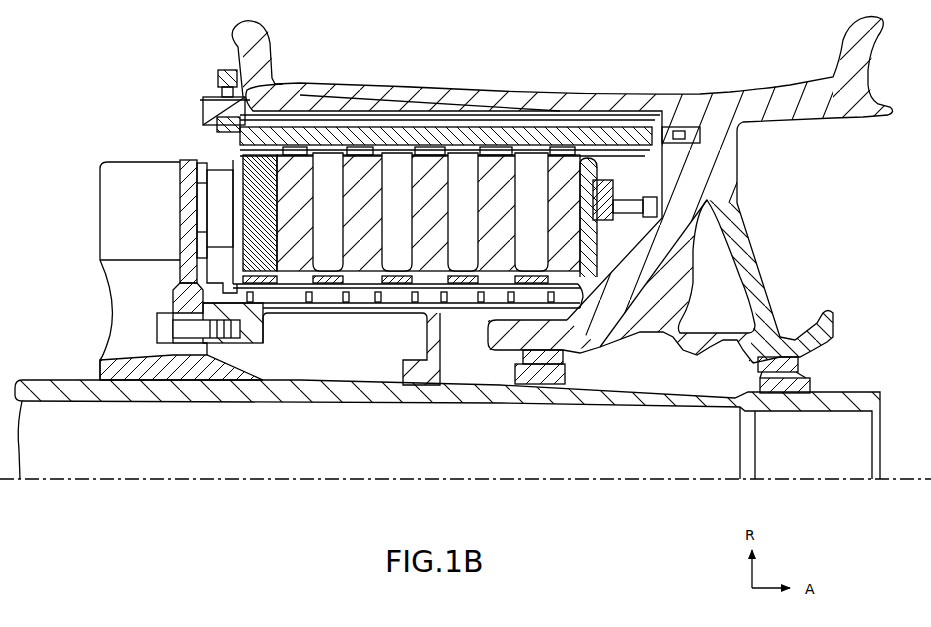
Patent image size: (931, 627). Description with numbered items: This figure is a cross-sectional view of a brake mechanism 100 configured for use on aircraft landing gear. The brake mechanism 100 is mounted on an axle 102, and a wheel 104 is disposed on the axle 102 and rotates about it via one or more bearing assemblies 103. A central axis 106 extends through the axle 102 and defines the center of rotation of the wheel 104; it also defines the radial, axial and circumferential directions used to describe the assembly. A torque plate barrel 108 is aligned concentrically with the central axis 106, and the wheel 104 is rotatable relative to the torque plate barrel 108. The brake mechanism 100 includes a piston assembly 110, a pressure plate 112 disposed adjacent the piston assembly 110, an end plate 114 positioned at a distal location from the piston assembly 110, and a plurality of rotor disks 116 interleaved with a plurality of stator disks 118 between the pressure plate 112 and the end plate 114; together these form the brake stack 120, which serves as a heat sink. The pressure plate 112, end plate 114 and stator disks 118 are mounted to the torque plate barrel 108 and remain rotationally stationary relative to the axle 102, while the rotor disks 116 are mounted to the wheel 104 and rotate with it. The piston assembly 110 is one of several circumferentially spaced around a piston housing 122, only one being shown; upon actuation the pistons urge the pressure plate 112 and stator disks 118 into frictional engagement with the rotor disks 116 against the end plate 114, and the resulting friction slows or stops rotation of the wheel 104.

The brake mechanism 100 is at (98, 66).
The axle 102 is at (645, 403).
The bearing assemblies 103 is at (790, 380).
The wheel 104 is at (742, 188).
The central axis 106 is at (612, 482).
The torque plate barrel 108 is at (313, 325).
The piston assembly 110 is at (163, 141).
The pressure plate 112 is at (243, 160).
The end plate 114 is at (592, 166).
The rotor disks 116 is at (296, 170).
The stator disks 118 is at (395, 160).
The brake stack 120 is at (411, 173).
The piston housing 122 is at (100, 205).